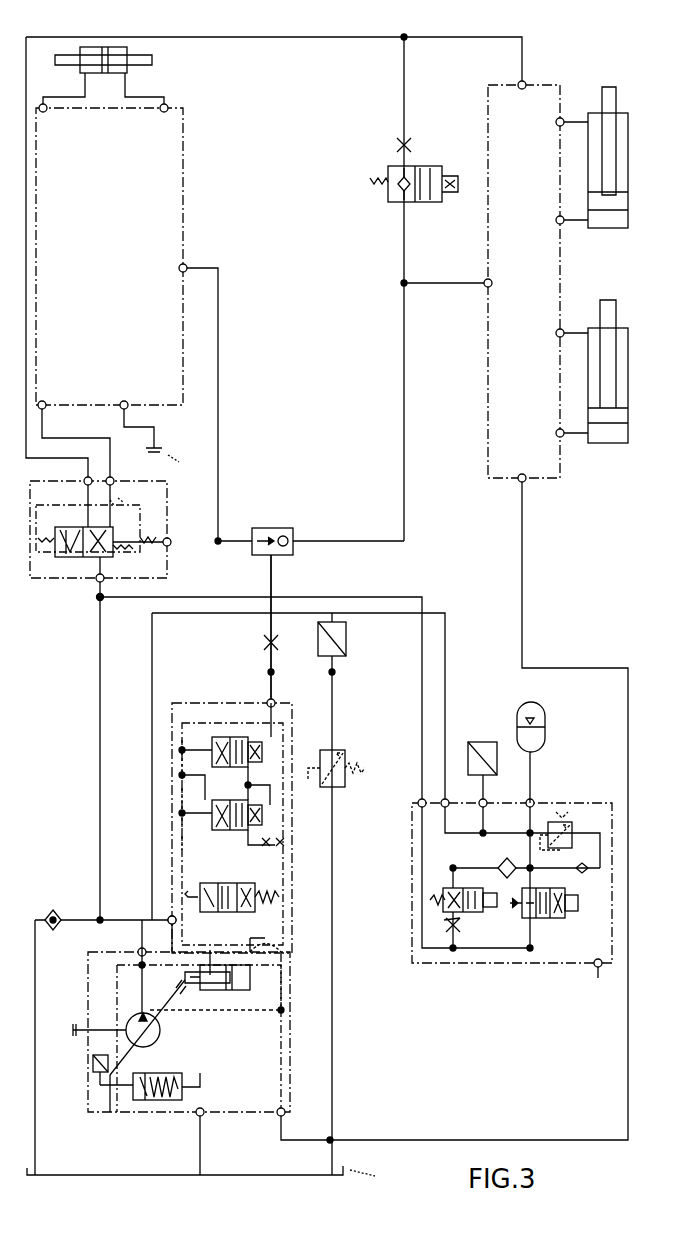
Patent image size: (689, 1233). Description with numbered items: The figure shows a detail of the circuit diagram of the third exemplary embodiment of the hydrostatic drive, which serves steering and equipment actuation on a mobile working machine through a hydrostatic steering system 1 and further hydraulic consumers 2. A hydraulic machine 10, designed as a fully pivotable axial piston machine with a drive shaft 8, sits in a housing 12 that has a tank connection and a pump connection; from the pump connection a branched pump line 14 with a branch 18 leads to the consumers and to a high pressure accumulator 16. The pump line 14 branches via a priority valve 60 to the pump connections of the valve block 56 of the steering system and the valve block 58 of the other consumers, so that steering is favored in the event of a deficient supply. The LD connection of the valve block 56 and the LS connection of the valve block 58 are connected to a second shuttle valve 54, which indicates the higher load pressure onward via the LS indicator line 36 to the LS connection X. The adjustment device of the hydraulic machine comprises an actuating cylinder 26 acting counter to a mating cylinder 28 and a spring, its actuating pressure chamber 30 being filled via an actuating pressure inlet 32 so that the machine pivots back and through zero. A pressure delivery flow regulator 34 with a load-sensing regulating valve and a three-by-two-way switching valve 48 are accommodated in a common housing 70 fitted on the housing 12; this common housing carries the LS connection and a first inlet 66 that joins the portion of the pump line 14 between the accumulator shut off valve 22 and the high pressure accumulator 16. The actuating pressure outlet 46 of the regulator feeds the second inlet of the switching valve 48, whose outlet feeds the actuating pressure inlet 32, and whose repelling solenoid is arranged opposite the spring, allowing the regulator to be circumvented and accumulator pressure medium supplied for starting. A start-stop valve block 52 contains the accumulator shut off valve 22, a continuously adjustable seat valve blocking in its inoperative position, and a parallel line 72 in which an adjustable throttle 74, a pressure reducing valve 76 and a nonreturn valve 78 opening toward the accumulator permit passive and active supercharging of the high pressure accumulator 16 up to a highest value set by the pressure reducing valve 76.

The hydrostatic steering system 1 is at (147, 264).
The further hydraulic consumers 2 is at (545, 261).
The drive shaft 8 is at (78, 1022).
The hydraulic machine 10 is at (100, 1062).
The housing 12 is at (186, 1035).
The pump line 14 is at (310, 42).
The high pressure accumulator 16 is at (548, 712).
The branch 18 is at (104, 601).
The accumulator shut off valve 22 is at (545, 936).
The actuating cylinder 26 is at (216, 998).
The mating cylinder 28 is at (156, 1103).
The actuating pressure chamber 30 is at (247, 996).
The actuating pressure inlet 32 is at (283, 968).
The pressure delivery flow regulator 34 is at (244, 837).
The LS indicator line 36 is at (274, 572).
The actuating pressure outlet 46 is at (246, 760).
The 3/2-way valve 48 is at (200, 896).
The start-stop valve block 52 is at (493, 878).
The second shuttle valve 54 is at (280, 516).
The valve block 56 is at (120, 270).
The valve block 58 is at (540, 322).
The priority valve 60 is at (47, 582).
The first inlet 66 is at (165, 911).
The common housing 70 is at (285, 870).
The parallel line 72 is at (462, 845).
The adjustable throttle 74 is at (448, 930).
The pressure reducing valve 76 is at (443, 896).
The nonreturn valve 78 is at (503, 866).